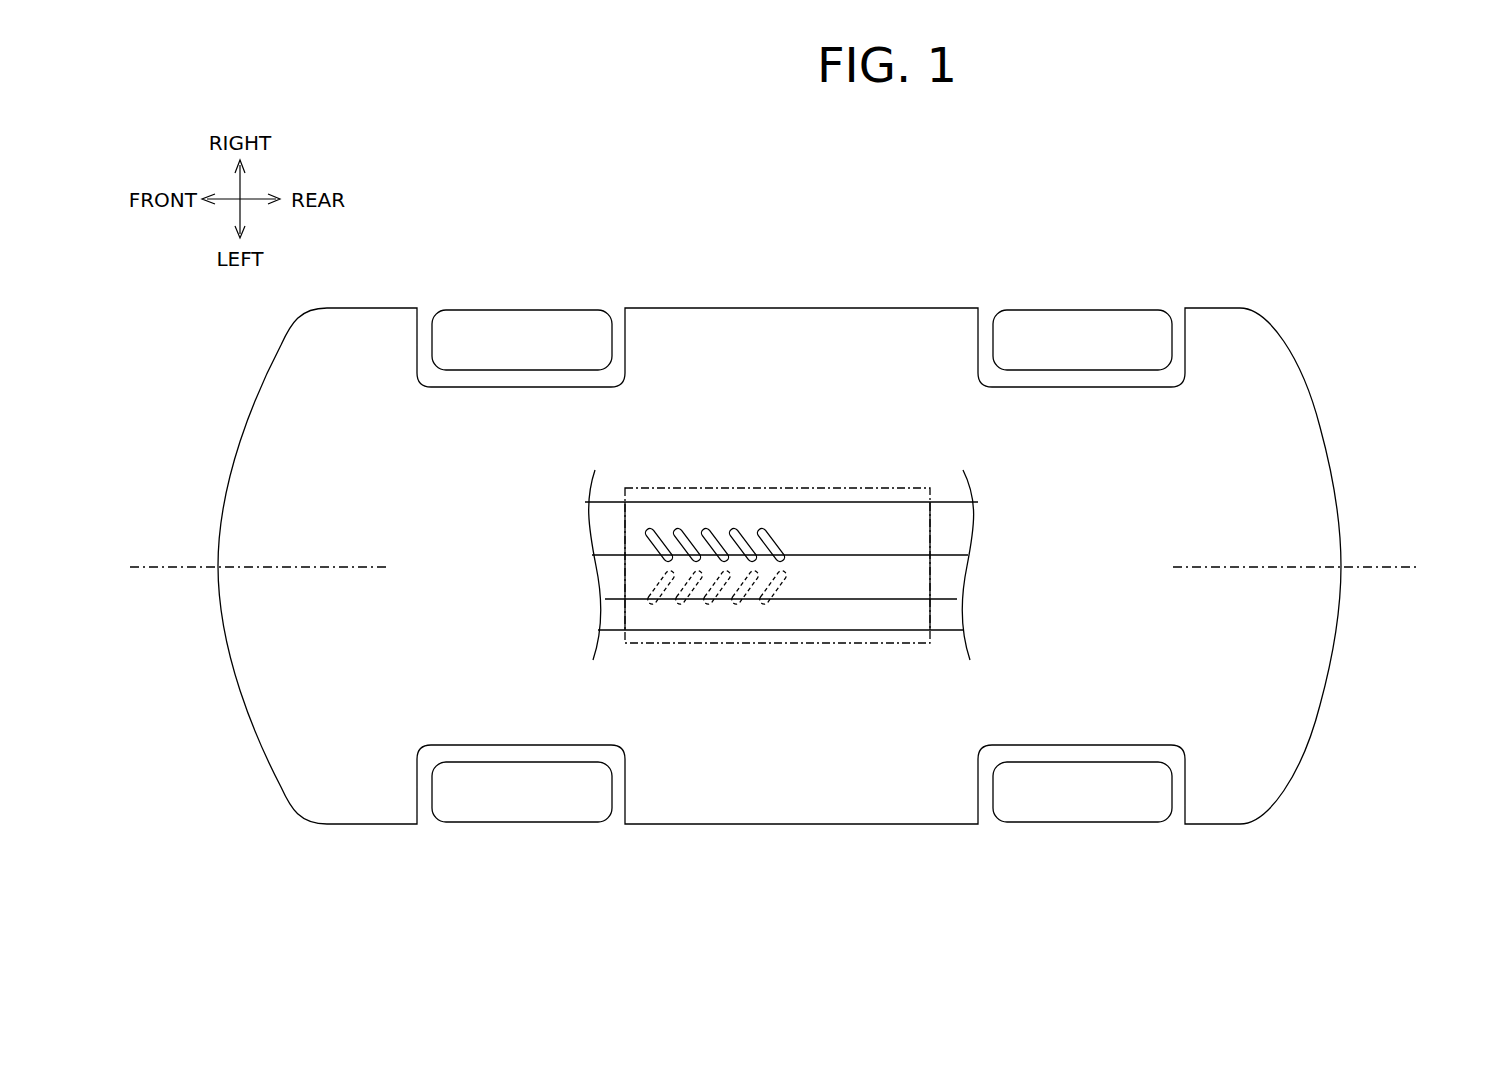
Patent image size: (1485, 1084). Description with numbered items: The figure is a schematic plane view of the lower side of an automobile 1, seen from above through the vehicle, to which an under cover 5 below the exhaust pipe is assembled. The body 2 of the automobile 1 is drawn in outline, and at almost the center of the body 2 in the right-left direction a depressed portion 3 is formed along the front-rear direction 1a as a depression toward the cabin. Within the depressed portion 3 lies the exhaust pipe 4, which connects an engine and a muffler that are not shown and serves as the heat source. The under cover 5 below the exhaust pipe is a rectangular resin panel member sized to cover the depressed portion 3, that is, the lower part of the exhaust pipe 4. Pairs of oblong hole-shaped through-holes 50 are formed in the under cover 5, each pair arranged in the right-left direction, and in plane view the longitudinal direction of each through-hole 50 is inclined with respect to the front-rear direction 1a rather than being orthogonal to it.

The automobile 1 is at (938, 224).
The front-rear direction 1a is at (793, 570).
The body 2 is at (812, 340).
The depressed portion 3 is at (952, 524).
The exhaust pipe 4 is at (850, 573).
The under cover below the exhaust pipe 5 is at (793, 493).
The through-holes 50 is at (657, 530).